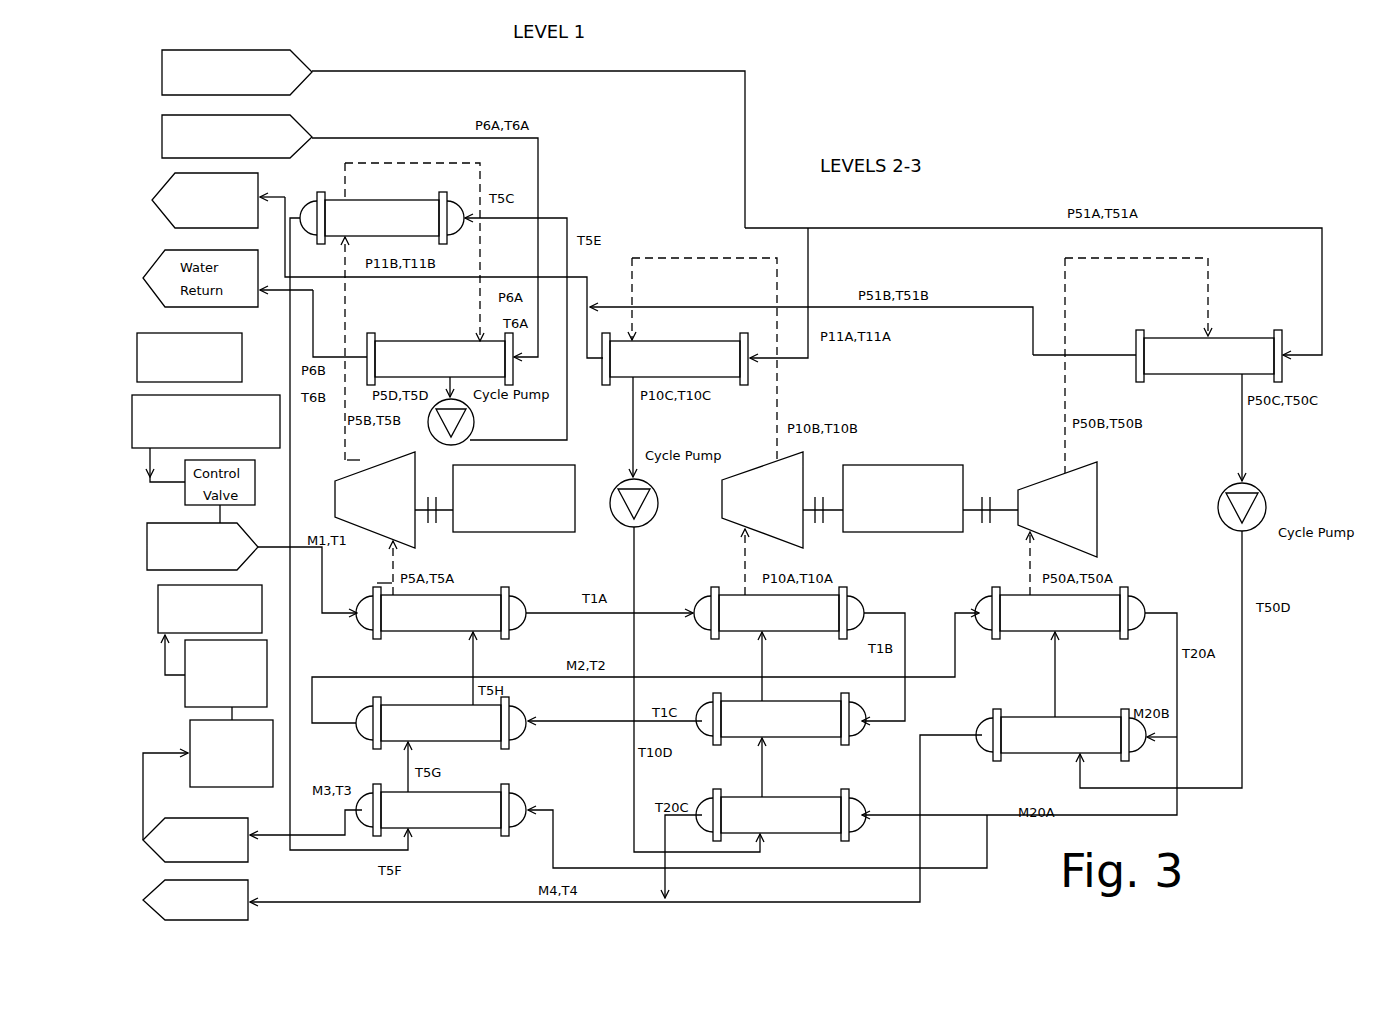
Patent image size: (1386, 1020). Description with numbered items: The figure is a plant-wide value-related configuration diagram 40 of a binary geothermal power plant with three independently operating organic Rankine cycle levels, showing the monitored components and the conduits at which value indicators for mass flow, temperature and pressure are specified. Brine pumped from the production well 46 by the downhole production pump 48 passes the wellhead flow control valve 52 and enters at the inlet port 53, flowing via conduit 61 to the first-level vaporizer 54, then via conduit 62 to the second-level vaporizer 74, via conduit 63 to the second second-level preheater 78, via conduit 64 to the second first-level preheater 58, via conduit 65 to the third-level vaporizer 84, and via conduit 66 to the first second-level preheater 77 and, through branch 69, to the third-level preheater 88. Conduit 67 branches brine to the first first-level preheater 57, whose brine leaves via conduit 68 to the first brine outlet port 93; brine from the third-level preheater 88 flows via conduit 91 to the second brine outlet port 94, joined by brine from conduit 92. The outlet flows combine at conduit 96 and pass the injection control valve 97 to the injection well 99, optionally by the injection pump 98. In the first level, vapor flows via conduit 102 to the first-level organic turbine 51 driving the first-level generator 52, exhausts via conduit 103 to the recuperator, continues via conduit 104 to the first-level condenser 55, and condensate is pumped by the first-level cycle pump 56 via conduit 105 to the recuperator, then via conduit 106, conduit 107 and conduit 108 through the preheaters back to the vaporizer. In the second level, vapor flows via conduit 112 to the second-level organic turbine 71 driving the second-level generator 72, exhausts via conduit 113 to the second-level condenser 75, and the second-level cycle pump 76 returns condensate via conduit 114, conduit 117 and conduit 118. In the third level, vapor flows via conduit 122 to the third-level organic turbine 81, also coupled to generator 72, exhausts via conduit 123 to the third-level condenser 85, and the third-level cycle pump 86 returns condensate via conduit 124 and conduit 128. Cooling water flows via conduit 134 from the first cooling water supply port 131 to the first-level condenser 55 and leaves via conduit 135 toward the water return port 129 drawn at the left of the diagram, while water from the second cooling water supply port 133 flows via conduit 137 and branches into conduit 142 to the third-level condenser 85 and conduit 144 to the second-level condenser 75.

The plant-wide value-related configuration diagram 40 is at (1243, 172).
The production well 46 is at (244, 352).
The downhole production pump 48 is at (260, 393).
The first-level organic turbine 51 is at (333, 500).
The first-level generator 52 is at (365, 204).
The inlet port 53 is at (251, 528).
The first-level vaporizer 54 is at (480, 590).
The first-level condenser 55 is at (440, 333).
The first-level cycle pump 56 is at (475, 414).
The first first-level preheater 57 is at (464, 790).
The second first-level preheater 58 is at (522, 742).
The conduit 61 is at (320, 572).
The conduit 62 is at (556, 603).
The conduit 63 is at (880, 603).
The conduit 64 is at (562, 717).
The conduit 65 is at (518, 675).
The conduit 66 is at (1179, 808).
The conduit 67 is at (905, 867).
The conduit 68 is at (286, 832).
The branch 69 is at (1173, 743).
The second-level organic turbine 71 is at (760, 463).
The second-level generator 72 is at (918, 463).
The second-level vaporizer 74 is at (742, 633).
The second-level condenser 75 is at (658, 339).
The second-level cycle pump 76 is at (660, 500).
The first second-level preheater 77 is at (787, 833).
The second second-level preheater 78 is at (817, 738).
The third-level organic turbine 81 is at (1043, 468).
The third-level vaporizer 84 is at (1138, 610).
The third-level condenser 85 is at (1237, 337).
The third-level cycle pump 86 is at (1268, 500).
The third-level preheater 88 is at (1088, 716).
The conduit 91 is at (434, 901).
The conduit 92 is at (669, 880).
The first brine outlet port 93 is at (252, 850).
The second brine outlet port 94 is at (252, 890).
The conduit 96 is at (168, 752).
The wellhead-positioned injection control valve 97 is at (210, 787).
The injection pump 98 is at (183, 691).
The injection well 99 is at (264, 620).
The conduit 102 is at (366, 568).
The conduit 103 is at (367, 311).
The conduit 104 is at (482, 233).
The conduit 105 is at (572, 380).
The conduit 106 is at (294, 655).
The conduit 107 is at (400, 767).
The conduit 108 is at (470, 668).
The conduit 112 is at (740, 565).
The conduit 113 is at (660, 257).
The conduit 114 is at (637, 547).
The conduit 117 is at (790, 768).
The conduit 118 is at (765, 668).
The conduit 122 is at (1027, 569).
The conduit 123 is at (1063, 297).
The conduit 124 is at (1245, 698).
The conduit 128 is at (1054, 685).
The water return 129 is at (262, 188).
The first cooling water supply port 131 is at (309, 123).
The second cooling water supply port 133 is at (236, 47).
The conduit 134 is at (426, 135).
The conduit 135 is at (324, 330).
The conduit 137 is at (415, 68).
The conduit 142 is at (1016, 226).
The conduit 144 is at (812, 290).